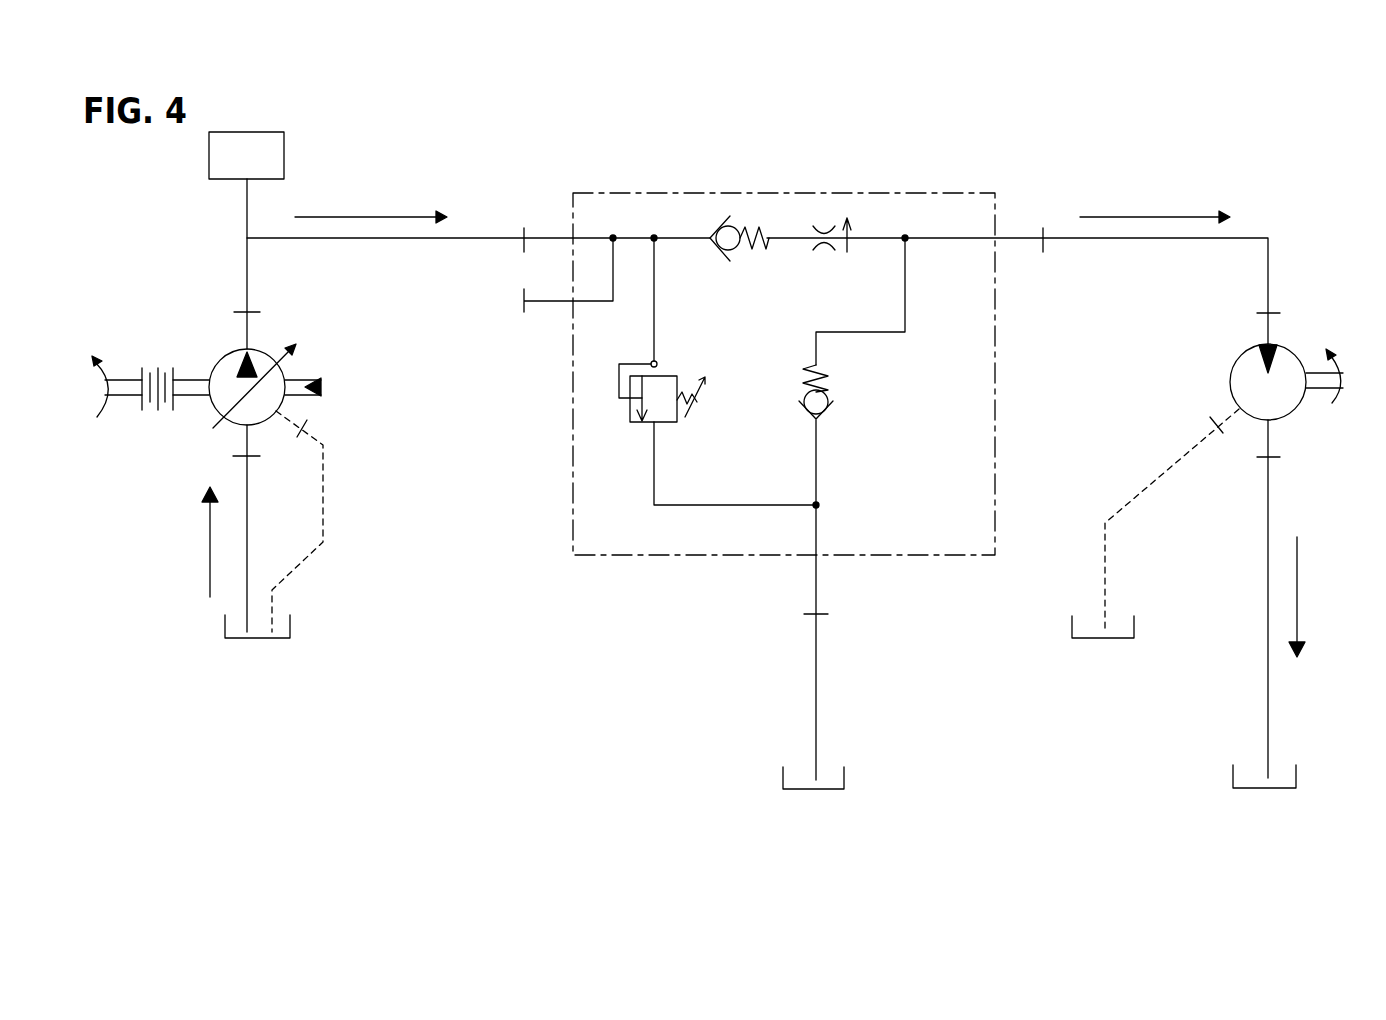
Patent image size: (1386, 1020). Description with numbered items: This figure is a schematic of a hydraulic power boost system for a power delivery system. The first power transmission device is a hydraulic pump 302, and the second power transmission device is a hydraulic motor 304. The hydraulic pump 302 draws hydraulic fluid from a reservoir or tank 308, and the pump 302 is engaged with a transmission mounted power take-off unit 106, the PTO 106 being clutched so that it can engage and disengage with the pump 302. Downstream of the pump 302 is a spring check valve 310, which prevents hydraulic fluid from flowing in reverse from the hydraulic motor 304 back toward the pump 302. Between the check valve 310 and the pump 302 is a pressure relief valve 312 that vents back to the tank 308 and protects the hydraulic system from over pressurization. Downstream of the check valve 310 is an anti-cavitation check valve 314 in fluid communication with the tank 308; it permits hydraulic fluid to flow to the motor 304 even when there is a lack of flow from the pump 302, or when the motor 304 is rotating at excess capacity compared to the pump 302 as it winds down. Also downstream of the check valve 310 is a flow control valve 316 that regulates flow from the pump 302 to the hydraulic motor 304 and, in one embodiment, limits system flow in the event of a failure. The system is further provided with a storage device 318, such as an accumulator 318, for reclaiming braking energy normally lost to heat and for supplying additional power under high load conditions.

The power take-off unit 106 is at (142, 371).
The hydraulic pump 302 is at (223, 358).
The hydraulic motor 304 is at (1290, 343).
The tank 308 is at (290, 625).
The spring check valve 310 is at (713, 237).
The pressure relief valve 312 is at (664, 372).
The anti-cavitation check valve 314 is at (828, 413).
The flow control valve 316 is at (824, 236).
The storage device 318 is at (284, 154).